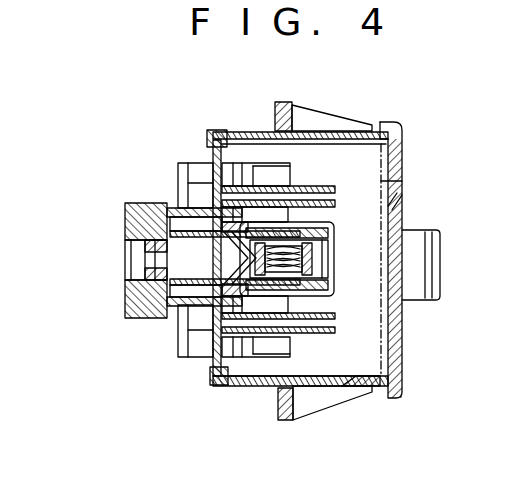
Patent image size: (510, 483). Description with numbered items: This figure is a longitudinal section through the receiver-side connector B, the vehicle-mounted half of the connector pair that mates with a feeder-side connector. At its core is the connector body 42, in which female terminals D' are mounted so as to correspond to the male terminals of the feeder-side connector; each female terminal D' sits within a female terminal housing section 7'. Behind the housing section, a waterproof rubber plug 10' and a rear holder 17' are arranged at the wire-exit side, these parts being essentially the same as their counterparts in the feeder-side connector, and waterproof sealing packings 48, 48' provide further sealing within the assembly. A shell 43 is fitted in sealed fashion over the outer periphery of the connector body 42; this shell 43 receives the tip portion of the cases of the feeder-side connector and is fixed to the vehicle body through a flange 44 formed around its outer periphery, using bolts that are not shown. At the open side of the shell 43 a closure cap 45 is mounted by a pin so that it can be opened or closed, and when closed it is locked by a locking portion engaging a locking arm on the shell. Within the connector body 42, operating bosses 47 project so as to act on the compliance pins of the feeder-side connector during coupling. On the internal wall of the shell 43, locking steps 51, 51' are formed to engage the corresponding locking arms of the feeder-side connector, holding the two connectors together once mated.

The receiver-side connector B is at (198, 104).
The locking step 51 is at (323, 96).
The locking step 51' is at (338, 428).
The closure cap 45 is at (394, 188).
The operating boss 47 is at (313, 191).
The female terminal housing section 7' is at (306, 243).
The female terminal D' is at (313, 269).
The rear holder 17' is at (106, 234).
The waterproof rubber plug 10' is at (111, 303).
The waterproof sealing packing 48' is at (187, 283).
The waterproof sealing packing 48 is at (218, 353).
The connector body 42 is at (226, 386).
The shell 43 is at (259, 387).
The flange 44 is at (287, 421).